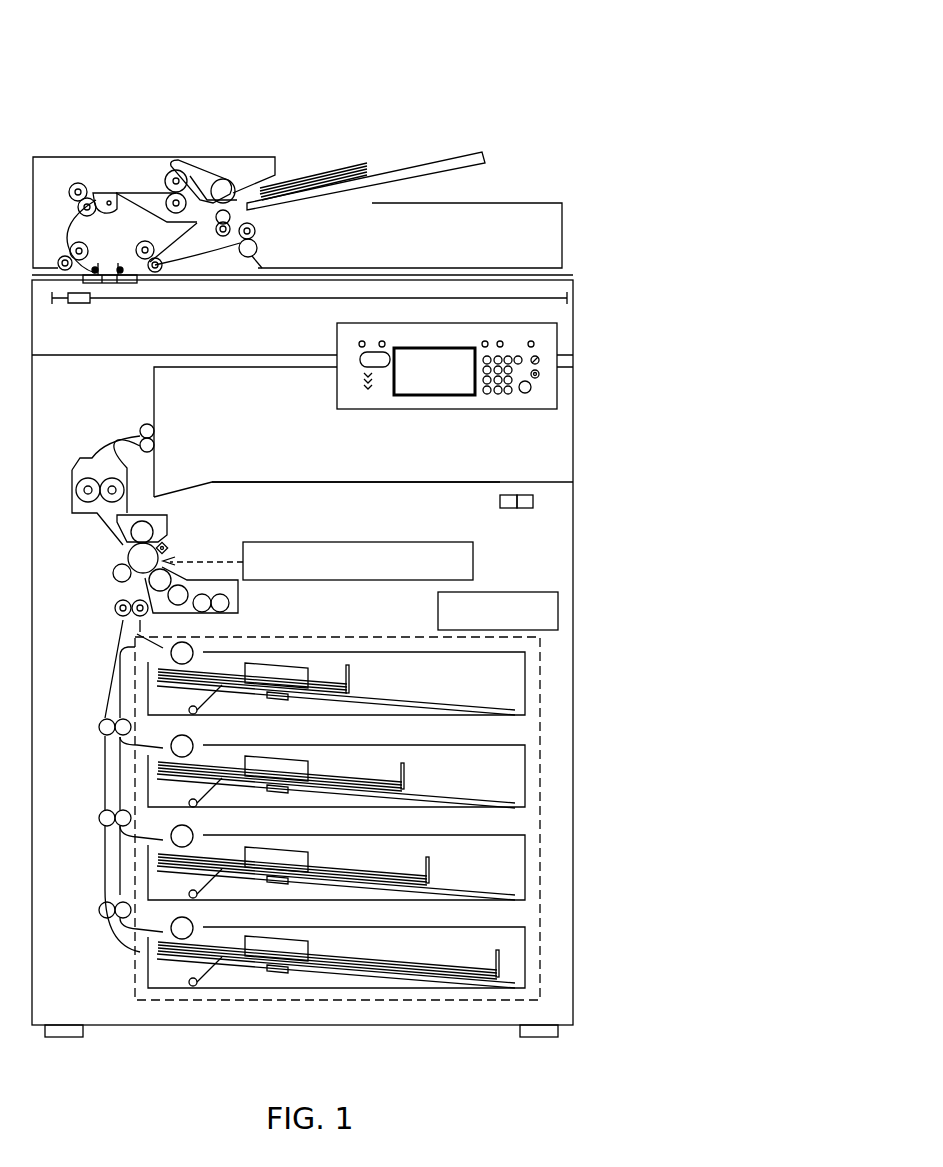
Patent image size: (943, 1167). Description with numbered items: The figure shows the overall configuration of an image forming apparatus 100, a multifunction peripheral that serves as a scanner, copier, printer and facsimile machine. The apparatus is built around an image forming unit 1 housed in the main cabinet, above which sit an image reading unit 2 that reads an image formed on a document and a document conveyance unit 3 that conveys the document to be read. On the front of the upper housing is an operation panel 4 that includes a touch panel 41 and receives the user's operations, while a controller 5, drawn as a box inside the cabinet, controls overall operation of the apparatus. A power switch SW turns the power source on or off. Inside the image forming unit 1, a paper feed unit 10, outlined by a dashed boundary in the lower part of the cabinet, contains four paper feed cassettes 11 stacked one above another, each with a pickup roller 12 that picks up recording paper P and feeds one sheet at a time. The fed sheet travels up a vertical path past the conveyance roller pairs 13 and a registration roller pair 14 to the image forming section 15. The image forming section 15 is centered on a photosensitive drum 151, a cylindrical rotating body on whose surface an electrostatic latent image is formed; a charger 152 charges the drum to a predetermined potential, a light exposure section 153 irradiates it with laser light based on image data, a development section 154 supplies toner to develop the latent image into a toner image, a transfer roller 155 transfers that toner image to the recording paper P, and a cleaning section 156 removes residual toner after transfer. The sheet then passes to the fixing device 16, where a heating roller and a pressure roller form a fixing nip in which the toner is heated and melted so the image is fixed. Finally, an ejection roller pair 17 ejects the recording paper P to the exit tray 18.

The image forming apparatus 100 is at (543, 88).
The image forming unit 1 is at (601, 534).
The image reading unit 2 is at (578, 304).
The document conveyance unit 3 is at (319, 147).
The operation panel 4 is at (549, 346).
The touch panel 41 is at (412, 348).
The controller 5 is at (527, 592).
The paper feed unit 10 is at (542, 660).
The paper feed cassette 11 is at (527, 690).
The pickup roller 12 is at (185, 643).
The conveyance roller pair 13 is at (99, 727).
The registration roller pair 14 is at (115, 608).
The image forming section 15 is at (258, 556).
The photosensitive drum 151 is at (128, 557).
The charger 152 is at (168, 548).
The light exposure section 153 is at (292, 547).
The development section 154 is at (238, 597).
The transfer roller 155 is at (113, 575).
The cleaning section 156 is at (156, 522).
The fixing device 16 is at (130, 488).
The ejection roller pair 17 is at (154, 431).
The exit tray 18 is at (367, 481).
The power switch SW is at (534, 502).
The recording paper P is at (349, 670).